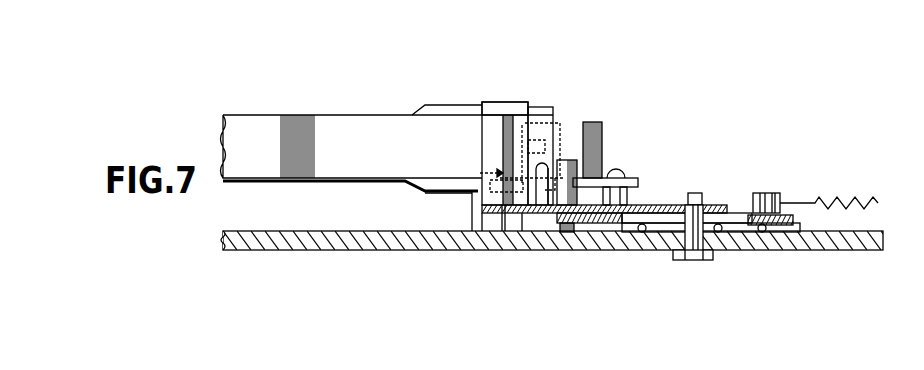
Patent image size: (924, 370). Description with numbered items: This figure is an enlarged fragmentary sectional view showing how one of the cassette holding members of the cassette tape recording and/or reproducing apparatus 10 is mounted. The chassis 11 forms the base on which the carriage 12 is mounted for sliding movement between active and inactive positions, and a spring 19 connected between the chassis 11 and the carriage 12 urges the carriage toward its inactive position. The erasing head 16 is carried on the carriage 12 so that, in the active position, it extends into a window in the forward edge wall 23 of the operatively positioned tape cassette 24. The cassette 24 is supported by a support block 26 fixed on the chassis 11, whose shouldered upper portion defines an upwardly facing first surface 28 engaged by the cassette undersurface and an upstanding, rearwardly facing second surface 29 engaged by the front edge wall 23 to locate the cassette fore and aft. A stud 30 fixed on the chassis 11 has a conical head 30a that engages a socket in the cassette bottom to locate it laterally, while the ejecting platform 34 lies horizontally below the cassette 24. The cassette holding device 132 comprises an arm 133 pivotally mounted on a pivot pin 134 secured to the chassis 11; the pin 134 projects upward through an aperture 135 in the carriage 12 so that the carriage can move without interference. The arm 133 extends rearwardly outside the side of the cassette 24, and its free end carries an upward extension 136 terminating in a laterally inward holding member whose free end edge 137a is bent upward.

The cassette tape recording and/or reproducing apparatus 10 is at (706, 139).
The chassis 11 is at (285, 249).
The carriage 12 is at (794, 221).
The erasing head 16 is at (599, 122).
The spring 19 is at (822, 203).
The forward edge wall 23 is at (553, 127).
The tape cassette 24 is at (306, 114).
The support block 26 is at (577, 172).
The first surface 28 is at (542, 178).
The second upstanding surface 29 is at (549, 167).
The stud 30 is at (472, 224).
The conical head 30a is at (479, 172).
The platform 34 is at (290, 185).
The cassette holding device 132 is at (521, 101).
The arm 133 is at (650, 205).
The pivot pin 134 is at (690, 259).
The aperture 135 is at (735, 213).
The extension 136 is at (484, 130).
The upwardly bent free end edge 137a is at (499, 103).